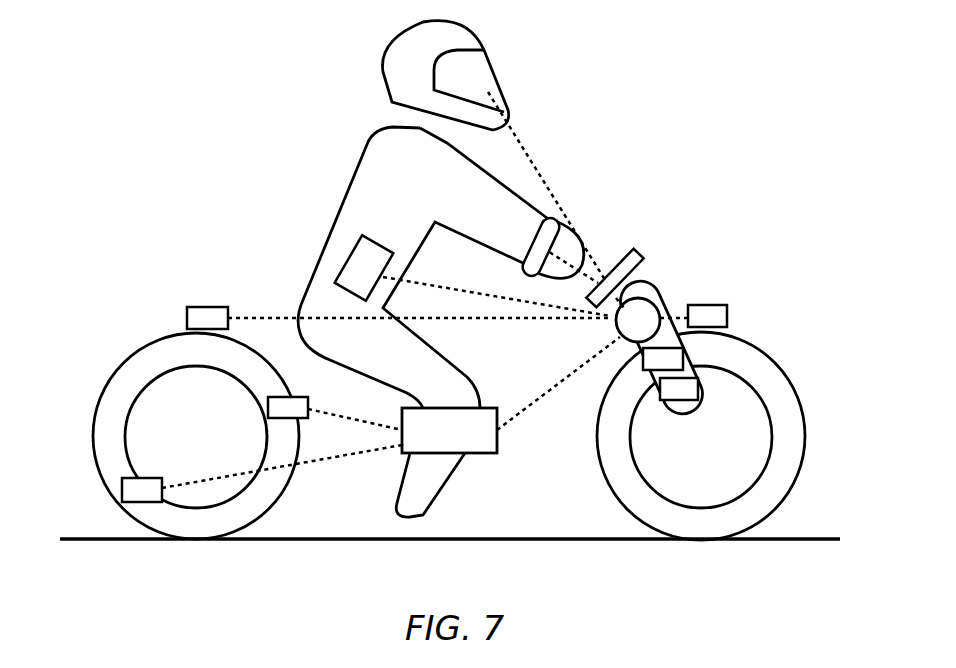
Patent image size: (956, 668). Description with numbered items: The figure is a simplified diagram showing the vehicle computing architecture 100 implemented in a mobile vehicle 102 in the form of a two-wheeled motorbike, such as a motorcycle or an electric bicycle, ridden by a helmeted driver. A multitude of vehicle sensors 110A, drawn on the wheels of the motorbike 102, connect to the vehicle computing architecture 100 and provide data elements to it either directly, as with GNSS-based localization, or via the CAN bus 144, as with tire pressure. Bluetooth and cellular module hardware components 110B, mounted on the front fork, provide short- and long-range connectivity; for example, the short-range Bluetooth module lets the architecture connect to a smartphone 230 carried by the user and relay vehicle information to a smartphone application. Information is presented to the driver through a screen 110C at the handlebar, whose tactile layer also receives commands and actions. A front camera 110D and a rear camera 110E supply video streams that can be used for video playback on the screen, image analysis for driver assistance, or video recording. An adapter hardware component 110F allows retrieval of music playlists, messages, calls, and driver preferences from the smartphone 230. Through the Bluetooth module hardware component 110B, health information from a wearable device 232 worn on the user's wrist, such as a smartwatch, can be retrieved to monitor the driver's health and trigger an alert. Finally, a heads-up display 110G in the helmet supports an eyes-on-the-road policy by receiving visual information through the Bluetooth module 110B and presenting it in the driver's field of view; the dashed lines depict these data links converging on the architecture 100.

The vehicle computing architecture 100 is at (650, 310).
The mobile vehicle 102 is at (742, 128).
The vehicle sensors 110A is at (270, 407).
The Bluetooth and cellular module hardware components 110B is at (677, 360).
The screen 110C is at (635, 253).
The front camera 110D is at (712, 310).
The rear camera 110E is at (197, 313).
The adapter hardware component 110F is at (683, 393).
The heads-up display 110G is at (485, 74).
The CAN bus 144 is at (483, 447).
The smartphone 230 is at (355, 258).
The wearable device 232 is at (545, 238).